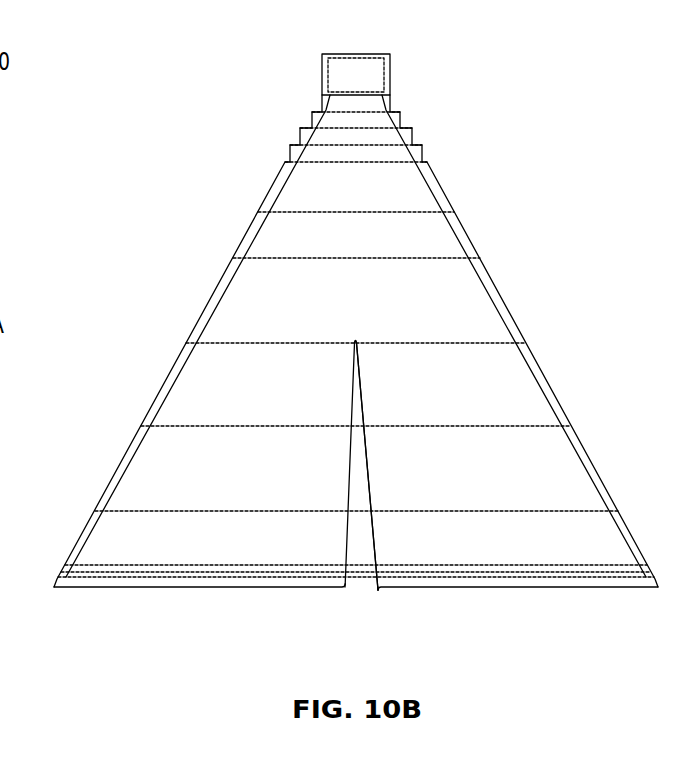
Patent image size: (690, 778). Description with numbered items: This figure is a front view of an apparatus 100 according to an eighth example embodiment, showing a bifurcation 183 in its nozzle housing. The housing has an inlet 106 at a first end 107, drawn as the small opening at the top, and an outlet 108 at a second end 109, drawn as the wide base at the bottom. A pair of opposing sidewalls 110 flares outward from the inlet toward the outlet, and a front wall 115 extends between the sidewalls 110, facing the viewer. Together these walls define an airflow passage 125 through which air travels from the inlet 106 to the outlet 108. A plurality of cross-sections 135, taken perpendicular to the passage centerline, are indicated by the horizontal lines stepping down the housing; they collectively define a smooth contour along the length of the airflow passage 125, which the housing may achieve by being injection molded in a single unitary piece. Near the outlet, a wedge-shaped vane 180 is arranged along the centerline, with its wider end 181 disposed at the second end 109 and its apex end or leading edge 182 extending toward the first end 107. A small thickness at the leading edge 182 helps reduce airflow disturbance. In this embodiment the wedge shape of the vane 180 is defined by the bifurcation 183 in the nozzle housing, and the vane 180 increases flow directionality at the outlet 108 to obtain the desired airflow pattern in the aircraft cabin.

The apparatus 100 is at (485, 128).
The inlet 106 is at (417, 75).
The first end 107 is at (375, 96).
The outlet 108 is at (356, 610).
The second end 109 is at (249, 588).
The opposing sidewalls 110 is at (286, 180).
The front wall 115 is at (453, 300).
The airflow passage 125 is at (585, 588).
The cross-sections 135 is at (320, 112).
The vane 180 is at (363, 392).
The wider end 181 is at (379, 588).
The leading edge 182 is at (355, 340).
The bifurcation 183 is at (370, 470).